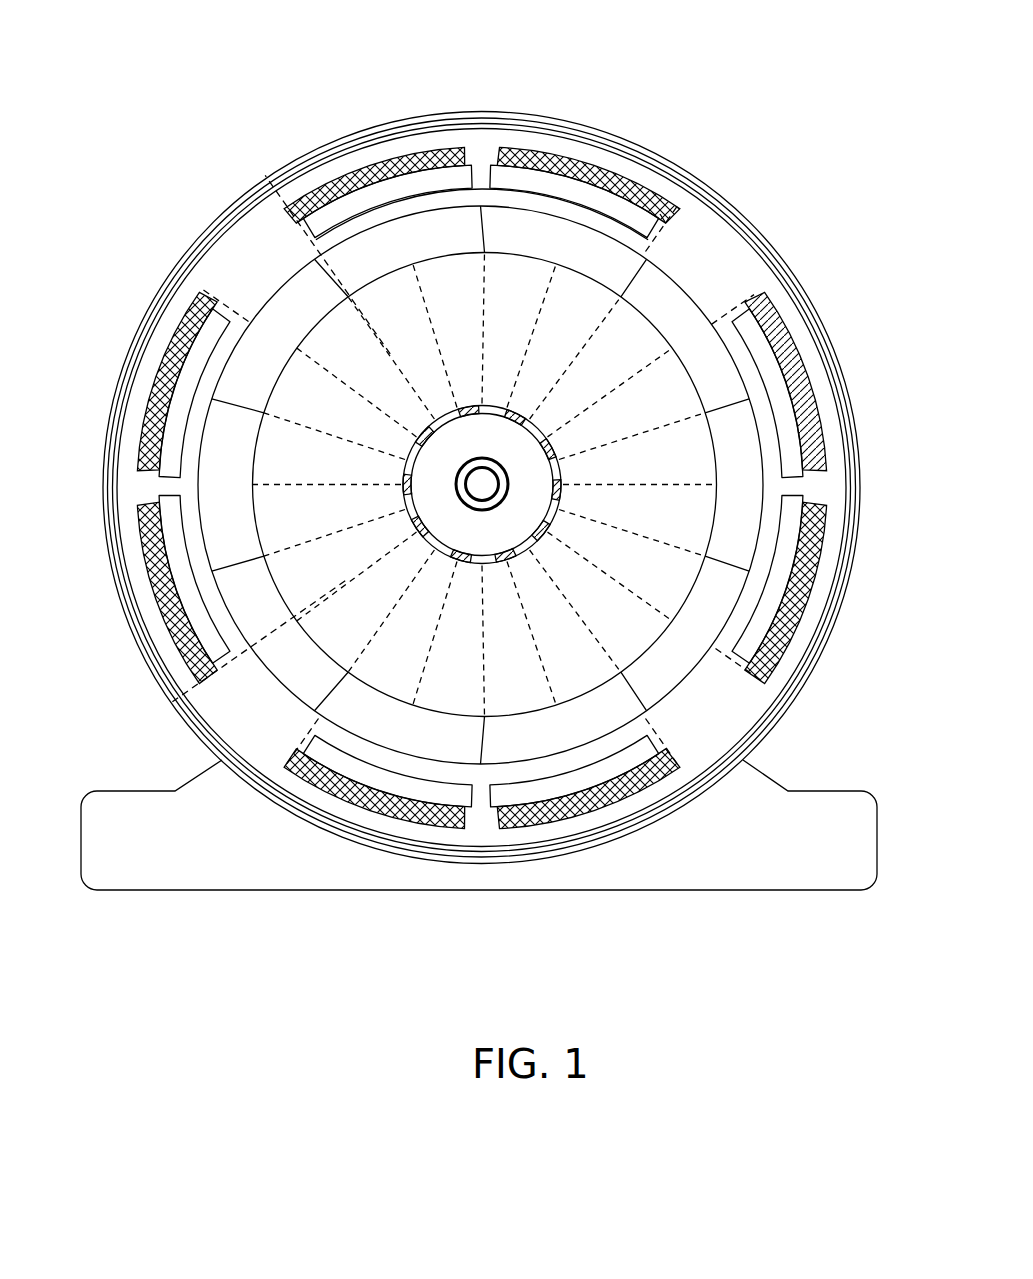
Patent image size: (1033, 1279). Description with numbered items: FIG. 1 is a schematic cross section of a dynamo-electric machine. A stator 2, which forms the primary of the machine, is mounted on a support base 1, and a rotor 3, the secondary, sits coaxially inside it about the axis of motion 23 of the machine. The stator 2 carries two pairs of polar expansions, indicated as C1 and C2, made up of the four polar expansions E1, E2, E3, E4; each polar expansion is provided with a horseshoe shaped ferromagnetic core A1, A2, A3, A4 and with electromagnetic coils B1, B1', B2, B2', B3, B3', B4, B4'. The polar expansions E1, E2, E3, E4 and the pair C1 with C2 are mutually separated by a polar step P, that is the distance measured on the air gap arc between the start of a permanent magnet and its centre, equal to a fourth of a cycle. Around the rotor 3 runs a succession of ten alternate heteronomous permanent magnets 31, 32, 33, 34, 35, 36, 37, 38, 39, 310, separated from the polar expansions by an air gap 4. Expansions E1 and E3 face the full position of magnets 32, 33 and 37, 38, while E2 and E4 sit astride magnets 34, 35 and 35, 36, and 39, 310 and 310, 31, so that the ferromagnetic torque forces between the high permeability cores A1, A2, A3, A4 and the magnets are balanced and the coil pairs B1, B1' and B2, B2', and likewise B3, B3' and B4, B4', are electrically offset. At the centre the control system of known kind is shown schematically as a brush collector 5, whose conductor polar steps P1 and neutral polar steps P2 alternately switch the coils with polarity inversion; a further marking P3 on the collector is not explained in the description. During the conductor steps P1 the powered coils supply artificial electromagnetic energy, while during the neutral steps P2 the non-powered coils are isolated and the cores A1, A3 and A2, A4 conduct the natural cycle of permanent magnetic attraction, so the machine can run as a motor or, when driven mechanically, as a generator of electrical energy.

The support base 1 is at (791, 880).
The stator 2 is at (862, 435).
The rotor 3 is at (232, 358).
The permanent magnet 31 is at (283, 292).
The permanent magnet 32 is at (378, 262).
The permanent magnet 33 is at (520, 232).
The permanent magnet 34 is at (670, 328).
The permanent magnet 35 is at (728, 462).
The permanent magnet 36 is at (685, 658).
The permanent magnet 37 is at (521, 740).
The permanent magnet 38 is at (418, 720).
The permanent magnet 39 is at (292, 668).
The permanent magnet 310 is at (224, 503).
The air gap 4 is at (273, 178).
The brush collector 5 is at (466, 517).
The axis of motion 23 is at (491, 508).
The polar step P is at (711, 217).
The conductor polar step P1 is at (457, 469).
The neutral polar step P2 is at (478, 479).
The hub pad P3 is at (483, 440).
The horseshoe shaped ferromagnetic core A1 is at (516, 150).
The horseshoe shaped ferromagnetic core A2 is at (772, 300).
The horseshoe shaped ferromagnetic core A3 is at (302, 782).
The horseshoe shaped ferromagnetic core A4 is at (183, 278).
The electromagnetic coil B1 is at (374, 137).
The electromagnetic coil B2 is at (848, 348).
The electromagnetic coil B3 is at (588, 865).
The electromagnetic coil B4 is at (155, 602).
The electromagnetic coil B1' is at (691, 150).
The electromagnetic coil B2' is at (806, 631).
The electromagnetic coil B3' is at (350, 882).
The electromagnetic coil B4' is at (191, 196).
The pair of polar expansions C1 is at (741, 217).
The pair of polar expansions C2 is at (190, 725).
The polar expansion E1 is at (456, 108).
The polar expansion E2 is at (864, 500).
The polar expansion E3 is at (489, 876).
The polar expansion E4 is at (103, 436).